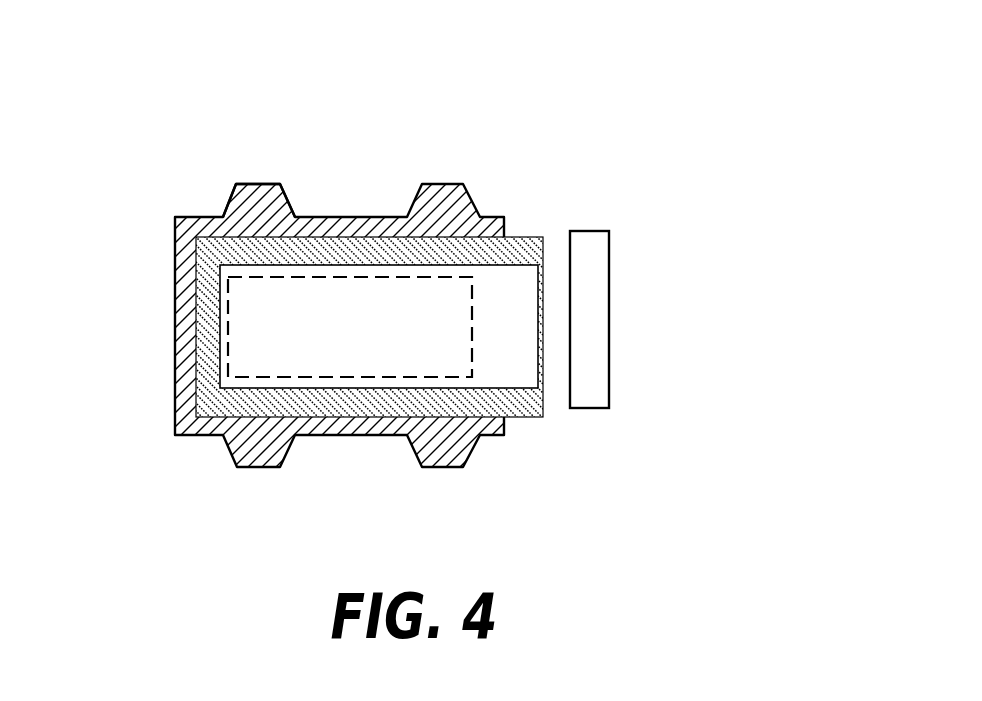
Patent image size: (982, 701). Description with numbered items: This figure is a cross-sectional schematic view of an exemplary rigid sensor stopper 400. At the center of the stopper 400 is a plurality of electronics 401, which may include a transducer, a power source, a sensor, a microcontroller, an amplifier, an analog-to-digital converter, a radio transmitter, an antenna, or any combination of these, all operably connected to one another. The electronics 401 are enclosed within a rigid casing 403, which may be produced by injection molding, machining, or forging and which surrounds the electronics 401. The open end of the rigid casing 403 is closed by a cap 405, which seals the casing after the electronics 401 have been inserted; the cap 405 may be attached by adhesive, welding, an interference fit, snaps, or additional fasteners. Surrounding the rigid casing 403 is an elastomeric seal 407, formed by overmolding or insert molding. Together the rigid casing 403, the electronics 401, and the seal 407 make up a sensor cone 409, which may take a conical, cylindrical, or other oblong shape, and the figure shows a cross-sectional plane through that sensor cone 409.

The rigid sensor stopper 400 is at (365, 31).
The plurality of electronics 401 is at (335, 358).
The rigid casing 403 is at (527, 403).
The cap 405 is at (593, 297).
The seal 407 is at (259, 199).
The sensor cone 409 is at (166, 310).